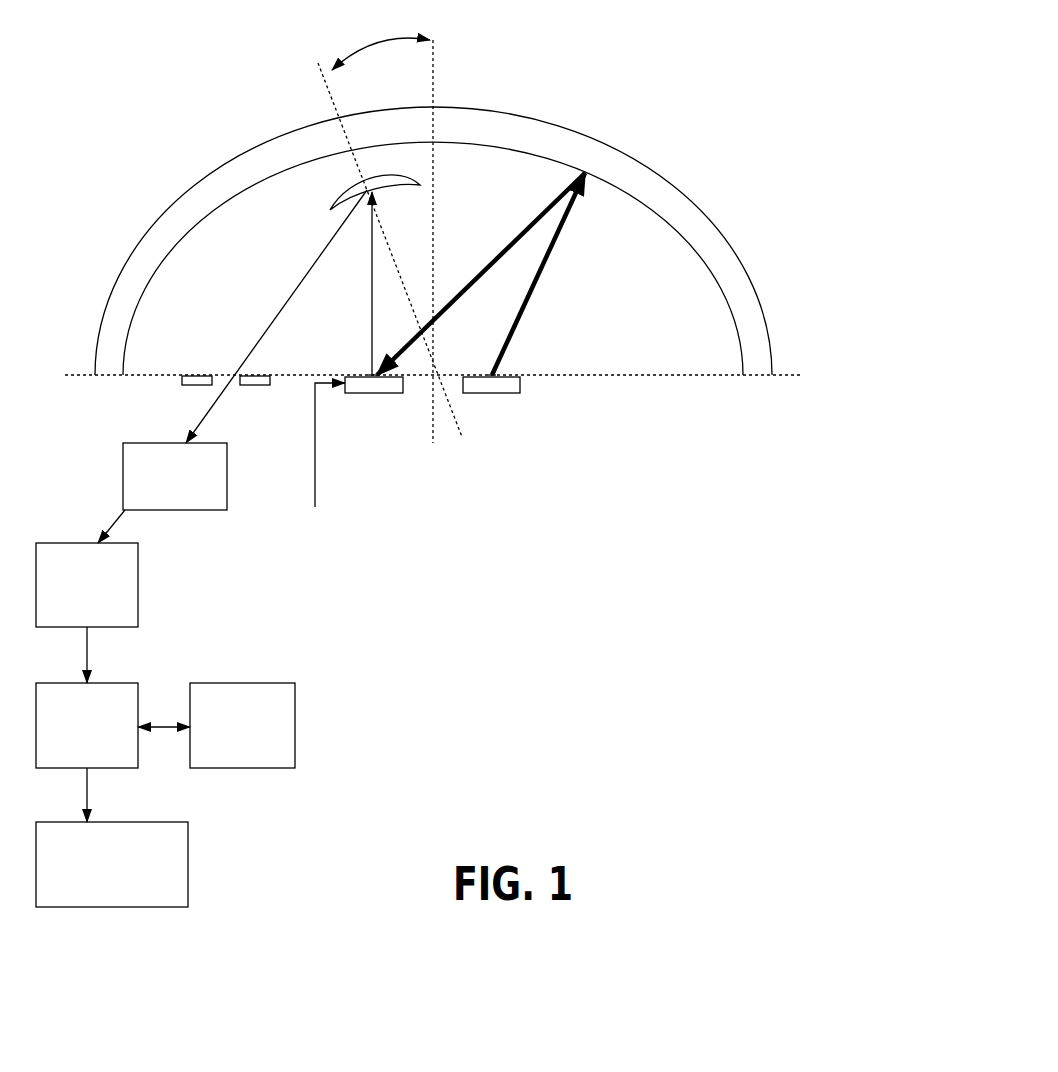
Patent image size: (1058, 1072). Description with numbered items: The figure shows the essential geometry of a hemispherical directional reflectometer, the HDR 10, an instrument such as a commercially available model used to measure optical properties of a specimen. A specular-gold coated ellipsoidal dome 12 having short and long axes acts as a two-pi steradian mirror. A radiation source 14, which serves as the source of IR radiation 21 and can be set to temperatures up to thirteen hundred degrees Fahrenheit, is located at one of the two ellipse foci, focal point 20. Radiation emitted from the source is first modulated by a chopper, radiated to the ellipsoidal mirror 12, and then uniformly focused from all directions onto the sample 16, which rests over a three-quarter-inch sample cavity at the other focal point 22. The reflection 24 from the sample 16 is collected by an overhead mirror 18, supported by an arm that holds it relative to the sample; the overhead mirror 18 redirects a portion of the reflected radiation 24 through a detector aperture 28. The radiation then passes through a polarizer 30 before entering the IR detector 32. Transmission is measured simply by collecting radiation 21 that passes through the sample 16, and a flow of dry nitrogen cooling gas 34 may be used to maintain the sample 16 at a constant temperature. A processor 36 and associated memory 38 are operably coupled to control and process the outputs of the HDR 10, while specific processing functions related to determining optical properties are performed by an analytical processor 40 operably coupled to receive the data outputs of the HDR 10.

The hemispherical directional reflectometer 10 is at (433, 235).
The ellipsoidal dome 12 is at (506, 241).
The radiation source 14 is at (550, 390).
The sample 16 is at (372, 396).
The overhead mirror 18 is at (303, 309).
The focal point 20 is at (485, 397).
The IR radiation 21 is at (481, 274).
The focal point 22 is at (340, 362).
The reflection 24 is at (357, 283).
The detector aperture 28 is at (223, 352).
The polarizer 30 is at (162, 493).
The IR detector 32 is at (87, 613).
The cooling gas 34 is at (314, 471).
The processor 36 is at (113, 752).
The memory 38 is at (242, 725).
The analytical processor 40 is at (112, 864).